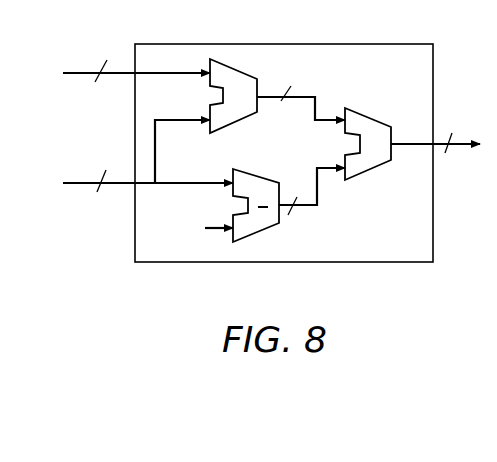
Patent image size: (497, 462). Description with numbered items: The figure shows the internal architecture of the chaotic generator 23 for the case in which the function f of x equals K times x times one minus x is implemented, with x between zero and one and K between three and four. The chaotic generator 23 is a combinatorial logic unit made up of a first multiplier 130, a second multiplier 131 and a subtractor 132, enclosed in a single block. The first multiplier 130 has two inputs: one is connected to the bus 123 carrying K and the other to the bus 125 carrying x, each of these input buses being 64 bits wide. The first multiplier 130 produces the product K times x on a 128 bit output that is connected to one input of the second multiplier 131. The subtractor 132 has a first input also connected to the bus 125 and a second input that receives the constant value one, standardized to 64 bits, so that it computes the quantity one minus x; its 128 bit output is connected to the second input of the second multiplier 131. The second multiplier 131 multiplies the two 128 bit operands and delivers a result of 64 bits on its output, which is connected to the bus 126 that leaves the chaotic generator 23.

The chaotic generator 23 is at (352, 53).
The bus 123 is at (118, 76).
The bus 125 is at (118, 186).
The bus 126 is at (436, 125).
The first multiplier 130 is at (235, 82).
The second multiplier 131 is at (365, 127).
The subtractor 132 is at (253, 223).
The 64-bit width 64 is at (280, 117).
The 128-bit width 128 is at (301, 152).